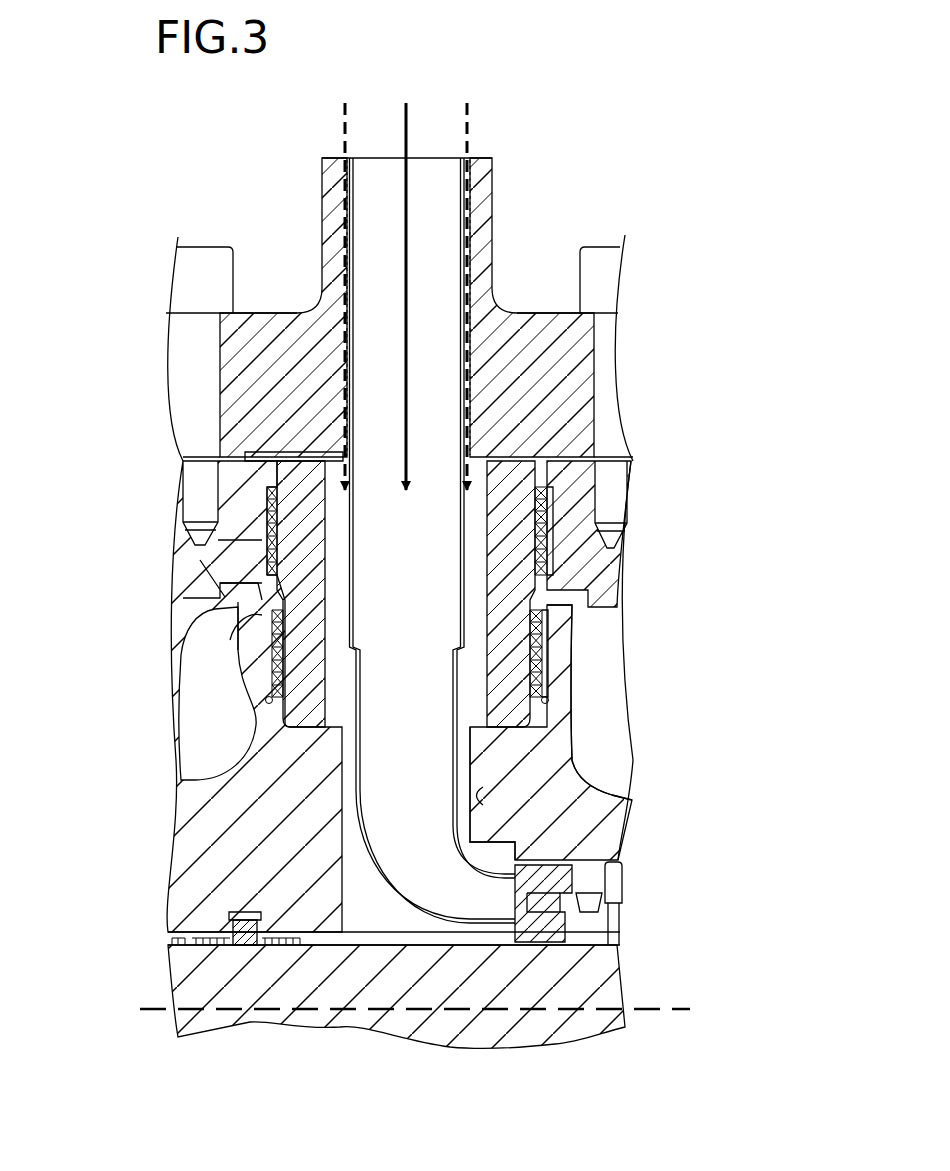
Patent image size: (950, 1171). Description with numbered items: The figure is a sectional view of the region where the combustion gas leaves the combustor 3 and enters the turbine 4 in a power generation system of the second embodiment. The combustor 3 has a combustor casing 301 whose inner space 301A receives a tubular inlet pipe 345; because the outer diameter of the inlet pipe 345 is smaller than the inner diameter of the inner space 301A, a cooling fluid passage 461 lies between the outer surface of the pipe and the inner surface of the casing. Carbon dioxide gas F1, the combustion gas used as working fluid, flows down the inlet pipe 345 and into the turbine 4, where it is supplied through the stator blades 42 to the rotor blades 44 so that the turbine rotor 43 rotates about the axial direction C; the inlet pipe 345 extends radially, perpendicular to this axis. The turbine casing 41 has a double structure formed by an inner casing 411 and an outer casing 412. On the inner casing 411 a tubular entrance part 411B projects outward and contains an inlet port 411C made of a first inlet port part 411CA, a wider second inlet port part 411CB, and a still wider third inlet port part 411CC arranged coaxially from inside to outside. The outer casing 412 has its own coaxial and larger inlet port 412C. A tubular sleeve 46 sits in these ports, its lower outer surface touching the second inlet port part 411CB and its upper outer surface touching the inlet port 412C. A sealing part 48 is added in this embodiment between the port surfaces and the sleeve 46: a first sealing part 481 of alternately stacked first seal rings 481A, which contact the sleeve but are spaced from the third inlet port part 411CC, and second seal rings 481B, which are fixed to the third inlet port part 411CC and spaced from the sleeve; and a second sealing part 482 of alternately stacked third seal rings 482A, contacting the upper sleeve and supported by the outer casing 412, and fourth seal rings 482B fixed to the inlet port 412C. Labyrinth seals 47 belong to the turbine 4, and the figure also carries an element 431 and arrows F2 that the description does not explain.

The combustor 3 is at (290, 250).
The turbine 4 is at (153, 452).
The combustor casing 301 is at (580, 350).
The inner space 301A is at (473, 270).
The inlet pipe 345 is at (473, 197).
The turbine casing 41 is at (80, 592).
The inner casing 411 is at (200, 803).
The entrance part 411B is at (260, 583).
The inlet port 411C is at (722, 655).
The first inlet port part 411CA is at (473, 755).
The second inlet port part 411CB is at (534, 713).
The third inlet port part 411CC is at (547, 672).
The outer casing 412 is at (187, 603).
The inlet port 412C is at (260, 540).
The stator blades 42 is at (535, 950).
The turbine rotor 43 is at (425, 1020).
The base protrusion 431 is at (590, 902).
The rotor blades 44 is at (613, 905).
The sleeve 46 is at (270, 502).
The cooling fluid passage 461 is at (270, 480).
The labyrinth seals 47 is at (243, 945).
The sealing part 48 is at (548, 468).
The first sealing part 481 is at (748, 565).
The first seal rings 481A is at (544, 617).
The second seal rings 481B is at (546, 627).
The second sealing part 482 is at (748, 480).
The third seal rings 482A is at (547, 490).
The fourth seal rings 482B is at (549, 505).
The axial direction C is at (682, 1012).
The carbon dioxide gas F1 is at (406, 284).
The reaction force F2 is at (406, 284).